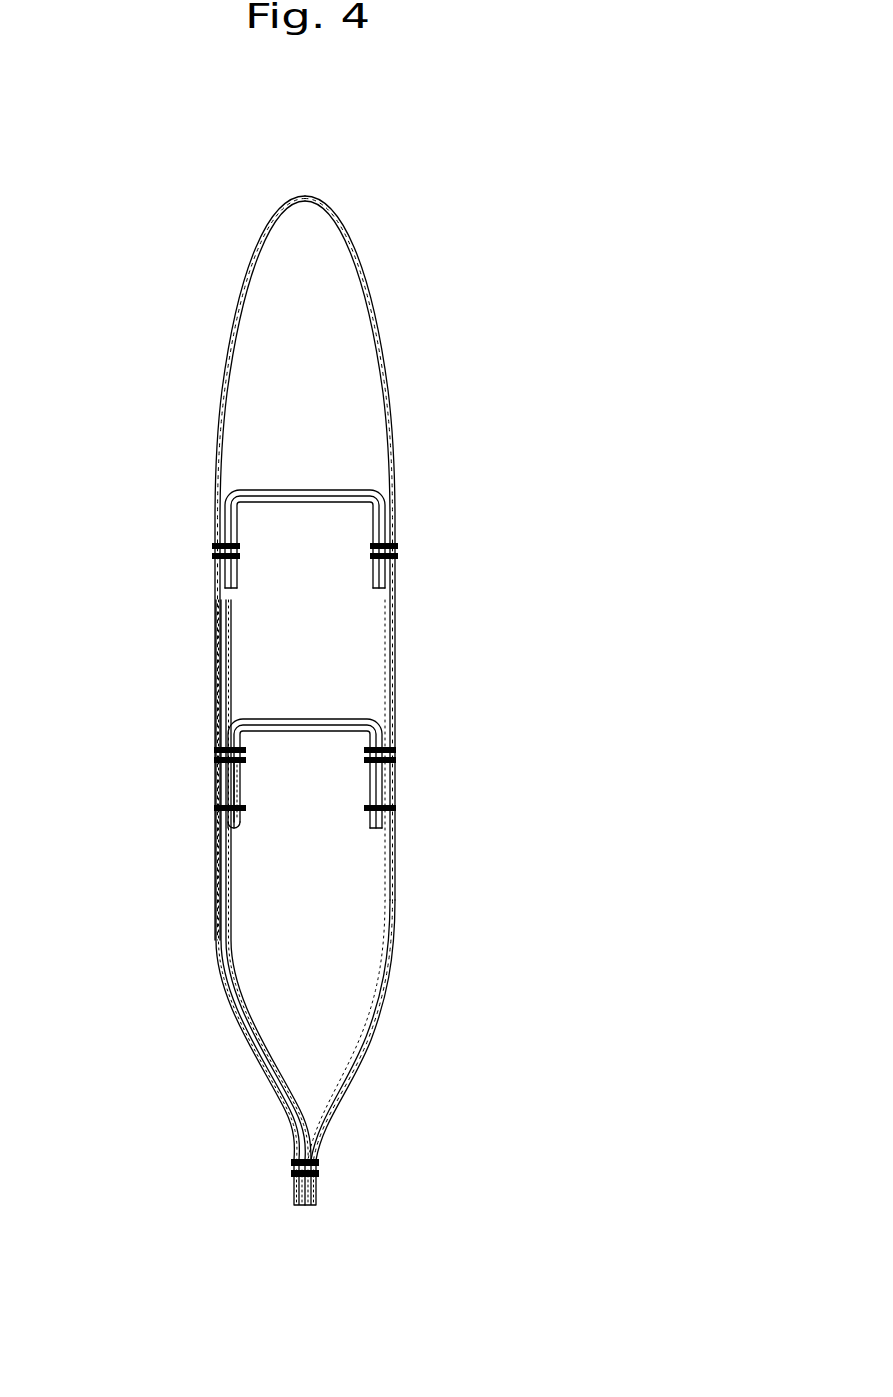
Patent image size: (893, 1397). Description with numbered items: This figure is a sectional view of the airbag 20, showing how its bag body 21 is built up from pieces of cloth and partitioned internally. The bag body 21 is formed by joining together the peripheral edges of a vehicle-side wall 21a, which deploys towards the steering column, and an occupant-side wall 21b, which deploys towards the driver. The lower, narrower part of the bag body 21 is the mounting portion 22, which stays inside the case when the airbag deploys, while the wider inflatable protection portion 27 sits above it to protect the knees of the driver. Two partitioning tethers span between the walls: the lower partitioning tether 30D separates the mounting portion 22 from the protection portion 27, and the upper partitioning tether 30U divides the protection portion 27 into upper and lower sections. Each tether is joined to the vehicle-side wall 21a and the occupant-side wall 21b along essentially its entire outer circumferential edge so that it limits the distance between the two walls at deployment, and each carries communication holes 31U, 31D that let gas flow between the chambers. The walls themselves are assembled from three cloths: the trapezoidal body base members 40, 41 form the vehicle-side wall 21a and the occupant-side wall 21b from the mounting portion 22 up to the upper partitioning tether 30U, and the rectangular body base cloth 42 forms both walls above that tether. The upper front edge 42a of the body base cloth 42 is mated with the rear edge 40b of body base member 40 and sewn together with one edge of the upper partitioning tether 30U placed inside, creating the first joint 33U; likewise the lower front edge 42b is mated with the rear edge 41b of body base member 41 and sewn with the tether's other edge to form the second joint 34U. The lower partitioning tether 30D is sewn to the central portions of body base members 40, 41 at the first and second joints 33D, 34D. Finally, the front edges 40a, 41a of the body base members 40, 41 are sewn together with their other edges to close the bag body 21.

The airbag 20 is at (310, 688).
The bag body 21 is at (226, 243).
The mounting portion 22 is at (362, 1086).
The protection portion 27 is at (425, 340).
The body base cloth 42 is at (357, 237).
The communication holes 31U is at (305, 489).
The communication holes 31D is at (305, 718).
The upper partitioning tether 30U is at (365, 462).
The lower partitioning tether 30D is at (249, 830).
The vehicle-side wall 21a is at (216, 496).
The occupant-side wall 21b is at (394, 496).
The body base member 40 is at (220, 918).
The body base member 41 is at (390, 918).
The front edge 40a is at (297, 1206).
The front edge 41a is at (313, 1206).
The rear edge 40b is at (224, 518).
The rear edge 41b is at (386, 518).
The first joint 33U is at (210, 546).
The second joint 34U is at (400, 546).
The first joint 33D is at (212, 749).
The second joint 34D is at (398, 749).
The upper front edge 42a is at (217, 575).
The lower front edge 42b is at (393, 575).